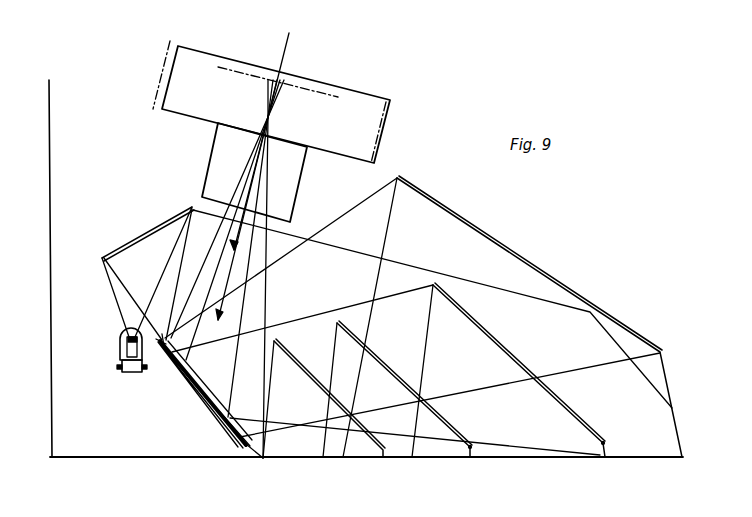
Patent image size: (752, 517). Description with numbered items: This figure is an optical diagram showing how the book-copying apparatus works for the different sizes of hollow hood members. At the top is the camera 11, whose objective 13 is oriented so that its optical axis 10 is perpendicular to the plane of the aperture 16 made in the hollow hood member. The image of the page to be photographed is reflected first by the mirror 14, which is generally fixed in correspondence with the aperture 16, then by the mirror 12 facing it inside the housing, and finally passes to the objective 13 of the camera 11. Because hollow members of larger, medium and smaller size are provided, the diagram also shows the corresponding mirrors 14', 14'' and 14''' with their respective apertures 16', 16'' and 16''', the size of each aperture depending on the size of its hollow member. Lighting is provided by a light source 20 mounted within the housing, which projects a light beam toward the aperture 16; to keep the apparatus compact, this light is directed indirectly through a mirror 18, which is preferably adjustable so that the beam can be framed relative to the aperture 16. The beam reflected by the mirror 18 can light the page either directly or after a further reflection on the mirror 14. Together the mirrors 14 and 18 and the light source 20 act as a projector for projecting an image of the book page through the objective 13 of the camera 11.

The optical axis 10 is at (232, 248).
The camera 11 is at (341, 107).
The mirror 12 is at (233, 433).
The objective 13 is at (287, 197).
The mirror 14 is at (508, 370).
The mirror 14' is at (397, 389).
The mirror 14'' is at (512, 316).
The mirror 14''' is at (324, 398).
The aperture 16 is at (530, 474).
The aperture 16' is at (435, 475).
The aperture 16'' is at (645, 472).
The aperture 16''' is at (277, 475).
The mirror 18 is at (130, 243).
The light source 20 is at (124, 375).